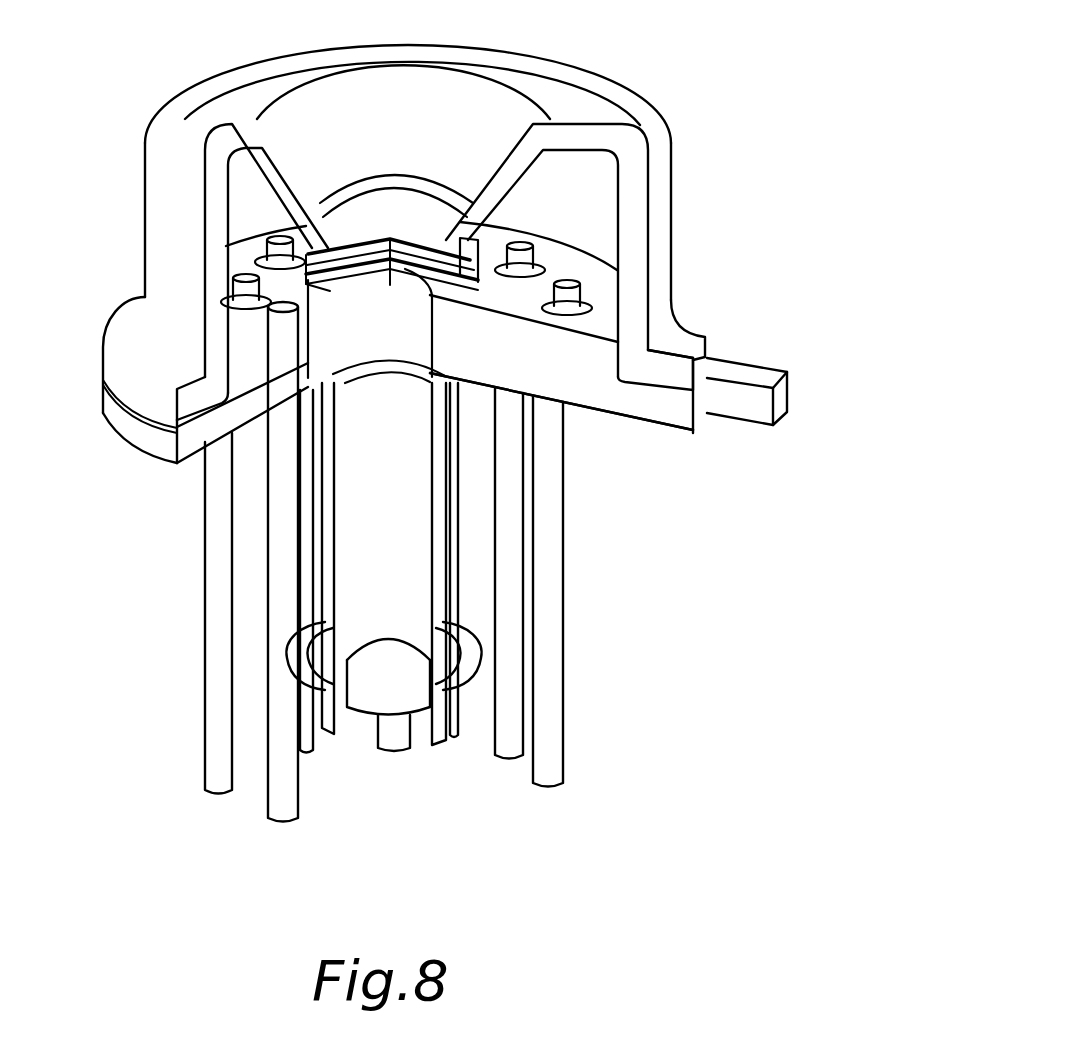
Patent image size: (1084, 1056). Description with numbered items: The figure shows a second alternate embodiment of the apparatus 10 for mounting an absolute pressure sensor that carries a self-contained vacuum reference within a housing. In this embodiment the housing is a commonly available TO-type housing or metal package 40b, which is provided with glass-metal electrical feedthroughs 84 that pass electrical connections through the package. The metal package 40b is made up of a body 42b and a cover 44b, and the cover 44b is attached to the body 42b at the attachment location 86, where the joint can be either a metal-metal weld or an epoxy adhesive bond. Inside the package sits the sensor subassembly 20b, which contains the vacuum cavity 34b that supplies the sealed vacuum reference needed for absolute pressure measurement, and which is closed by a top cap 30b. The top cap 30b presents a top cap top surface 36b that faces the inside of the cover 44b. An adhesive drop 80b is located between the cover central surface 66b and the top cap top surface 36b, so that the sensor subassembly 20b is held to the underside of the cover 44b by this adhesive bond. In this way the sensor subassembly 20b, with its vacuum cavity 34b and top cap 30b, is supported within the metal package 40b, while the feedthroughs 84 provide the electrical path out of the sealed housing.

The apparatus for mounting an absolute pressure sensor 10 is at (592, 180).
The sensor subassembly 20b is at (468, 282).
The top cap 30b is at (323, 253).
The vacuum cavity 34b is at (434, 333).
The top cap top surface 36b is at (410, 203).
The metal package 40b is at (814, 294).
The body 42b is at (628, 461).
The cover 44b is at (716, 254).
The cover central surface 66b is at (400, 228).
The adhesive drop 80b is at (358, 243).
The glass-metal electrical feedthroughs 84 is at (545, 270).
The attachment location 86 is at (103, 380).